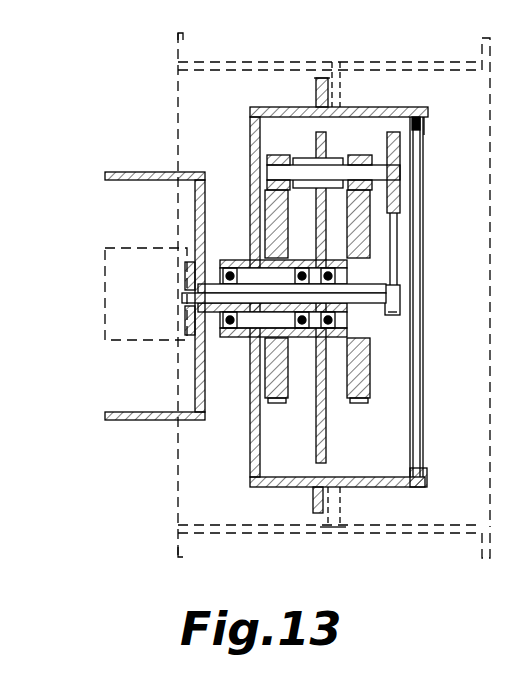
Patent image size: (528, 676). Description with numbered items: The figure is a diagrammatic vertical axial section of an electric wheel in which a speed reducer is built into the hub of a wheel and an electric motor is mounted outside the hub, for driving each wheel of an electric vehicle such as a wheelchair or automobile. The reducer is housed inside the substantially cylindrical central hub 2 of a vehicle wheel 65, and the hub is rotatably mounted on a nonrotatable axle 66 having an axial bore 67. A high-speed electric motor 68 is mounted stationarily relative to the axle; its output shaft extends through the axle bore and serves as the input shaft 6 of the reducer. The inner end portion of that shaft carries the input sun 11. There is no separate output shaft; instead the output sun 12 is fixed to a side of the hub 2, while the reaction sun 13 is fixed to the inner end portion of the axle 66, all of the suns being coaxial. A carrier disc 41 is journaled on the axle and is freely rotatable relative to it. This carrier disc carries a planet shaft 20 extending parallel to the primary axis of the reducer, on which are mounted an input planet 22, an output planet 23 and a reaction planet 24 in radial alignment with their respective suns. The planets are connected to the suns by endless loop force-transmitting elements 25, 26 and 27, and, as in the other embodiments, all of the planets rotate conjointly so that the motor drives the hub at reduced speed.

The central hub 2 is at (377, 100).
The input shaft 6 is at (386, 320).
The input sun 11 is at (393, 300).
The output sun 12 is at (277, 218).
The reaction sun 13 is at (380, 240).
The planet shaft 20 is at (393, 173).
The input planet 22 is at (417, 147).
The output planet 23 is at (293, 143).
The reaction planet 24 is at (363, 155).
The endless loop force-transmitting element 25 is at (393, 266).
The endless loop force-transmitting element 26 is at (268, 188).
The endless loop force-transmitting element 27 is at (387, 198).
The carrier disc 41 is at (322, 430).
The vehicle wheel 65 is at (305, 63).
The axle 66 is at (212, 318).
The axial bore 67 is at (192, 308).
The electric motor 68 is at (128, 270).